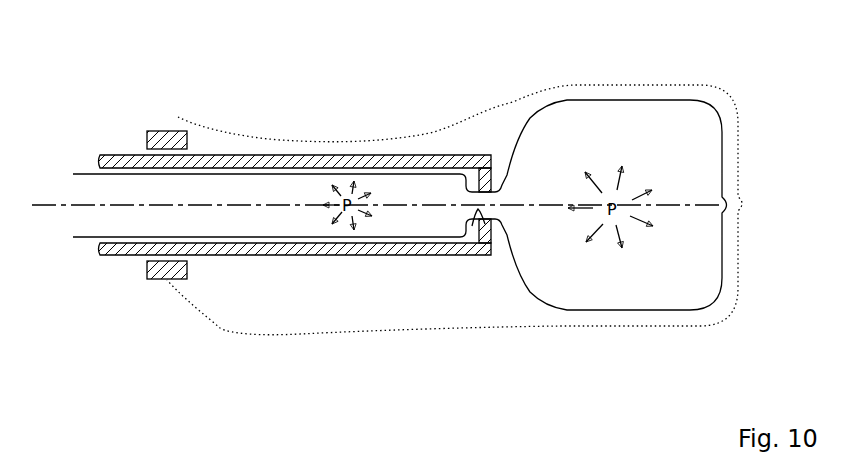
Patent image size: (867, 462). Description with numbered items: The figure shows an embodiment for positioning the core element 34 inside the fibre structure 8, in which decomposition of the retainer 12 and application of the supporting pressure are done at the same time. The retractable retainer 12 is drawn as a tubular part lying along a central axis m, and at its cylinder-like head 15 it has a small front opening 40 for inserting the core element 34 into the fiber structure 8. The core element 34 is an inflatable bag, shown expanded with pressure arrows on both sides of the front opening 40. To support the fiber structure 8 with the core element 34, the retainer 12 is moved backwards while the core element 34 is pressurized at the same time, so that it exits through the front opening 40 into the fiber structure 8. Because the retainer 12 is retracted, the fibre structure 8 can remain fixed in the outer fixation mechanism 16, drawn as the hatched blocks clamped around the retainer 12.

The central axis m is at (48, 205).
The fibre structure 8 is at (627, 85).
The retainer 12 is at (225, 160).
The cylinder-like head 15 is at (491, 248).
The outer fixation mechanism 16 is at (170, 131).
The core element 34 is at (567, 100).
The front opening 40 is at (478, 210).